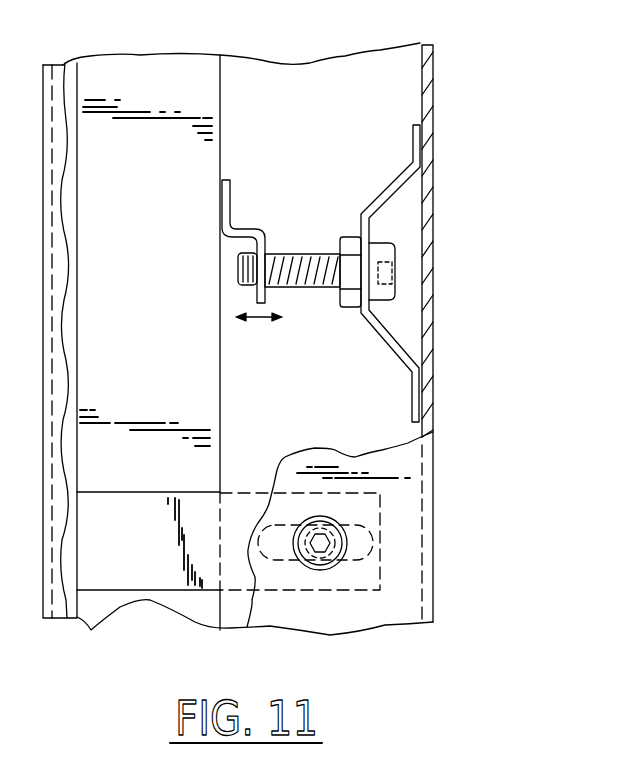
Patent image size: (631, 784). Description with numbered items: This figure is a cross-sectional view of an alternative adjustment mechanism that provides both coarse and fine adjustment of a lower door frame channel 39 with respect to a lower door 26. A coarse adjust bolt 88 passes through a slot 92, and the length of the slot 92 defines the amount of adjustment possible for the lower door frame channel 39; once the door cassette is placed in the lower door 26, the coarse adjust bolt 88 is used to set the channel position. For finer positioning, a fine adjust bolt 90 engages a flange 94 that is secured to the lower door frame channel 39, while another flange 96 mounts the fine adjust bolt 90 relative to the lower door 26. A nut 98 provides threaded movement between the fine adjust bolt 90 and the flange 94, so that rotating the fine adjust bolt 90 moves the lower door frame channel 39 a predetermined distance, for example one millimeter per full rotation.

The lower door 26 is at (433, 97).
The lower door frame channel 39 is at (222, 90).
The coarse adjust bolt 88 is at (322, 560).
The fine adjust bolt 90 is at (392, 268).
The slot 92 is at (362, 527).
The flange 94 is at (237, 235).
The flange 96 is at (392, 203).
The nut 98 is at (350, 306).